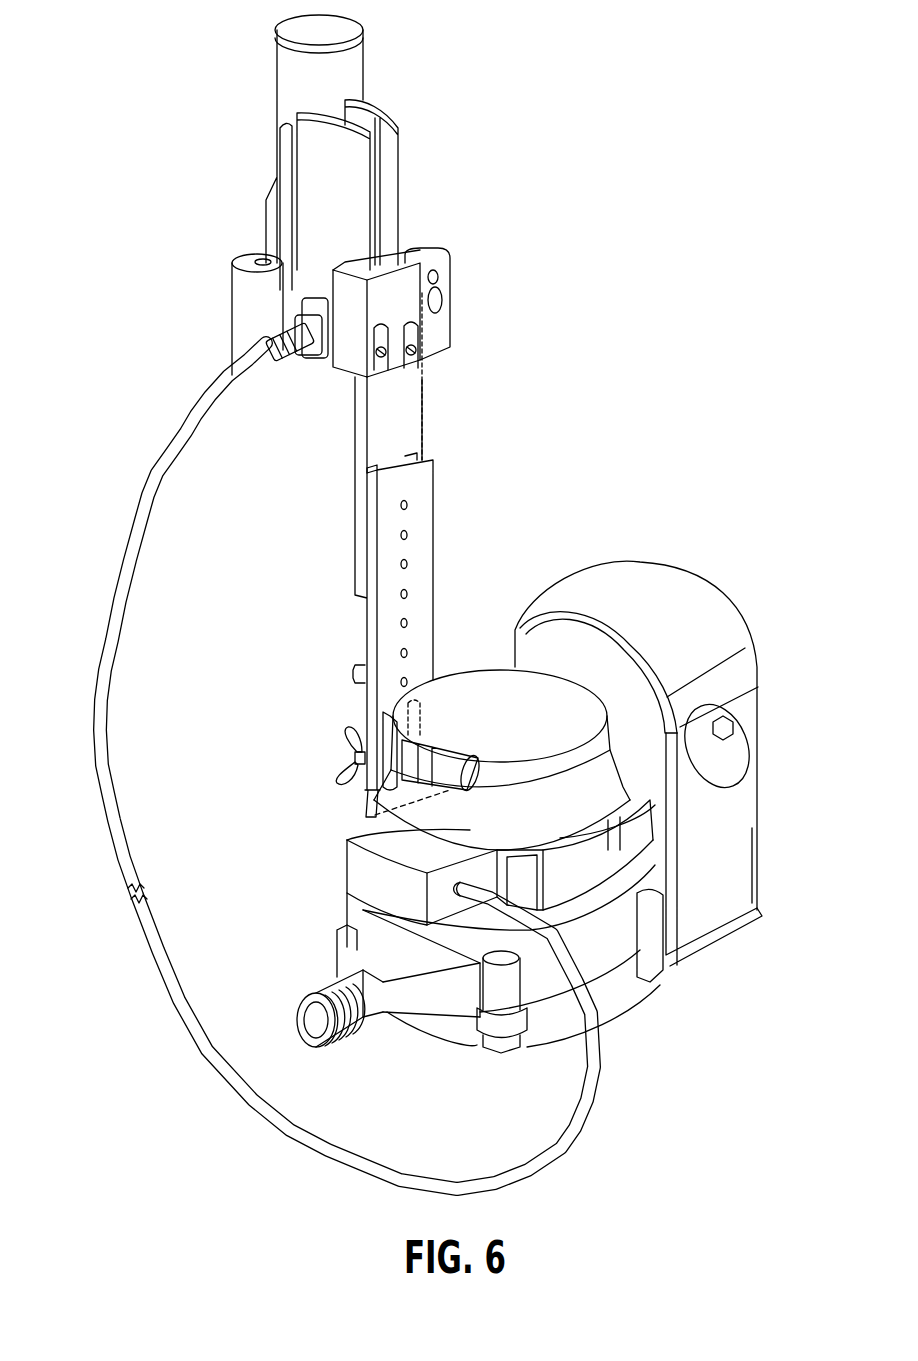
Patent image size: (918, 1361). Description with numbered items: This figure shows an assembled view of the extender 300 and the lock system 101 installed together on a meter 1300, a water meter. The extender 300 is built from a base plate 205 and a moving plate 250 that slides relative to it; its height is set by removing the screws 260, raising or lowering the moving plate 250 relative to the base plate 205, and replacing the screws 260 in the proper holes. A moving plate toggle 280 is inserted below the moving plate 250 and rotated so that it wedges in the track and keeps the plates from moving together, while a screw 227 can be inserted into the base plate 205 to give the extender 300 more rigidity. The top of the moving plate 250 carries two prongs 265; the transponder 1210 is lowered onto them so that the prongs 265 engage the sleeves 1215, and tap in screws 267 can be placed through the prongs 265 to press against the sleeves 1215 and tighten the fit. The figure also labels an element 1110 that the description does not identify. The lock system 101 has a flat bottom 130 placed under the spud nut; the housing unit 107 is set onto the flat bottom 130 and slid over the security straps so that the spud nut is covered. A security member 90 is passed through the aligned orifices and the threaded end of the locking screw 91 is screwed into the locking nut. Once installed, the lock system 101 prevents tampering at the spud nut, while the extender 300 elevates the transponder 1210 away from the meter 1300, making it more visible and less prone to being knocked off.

The transponder 1210 is at (402, 153).
The sleeves 1215 is at (381, 352).
The tap in screws 267 is at (408, 350).
The prongs 265 is at (392, 362).
The moving plate 250 is at (422, 433).
The base plate 205 is at (435, 513).
The extender 300 is at (450, 560).
The screws 260 is at (400, 564).
The moving plate toggle 280 is at (356, 673).
The screw 227 is at (352, 758).
The sensor clamp 1110 is at (344, 773).
The lock system 101 is at (690, 556).
The housing unit 107 is at (718, 600).
The locking screw 91 is at (734, 729).
The security member 90 is at (722, 768).
The flat bottom 130 is at (718, 947).
The meter 1300 is at (620, 1010).